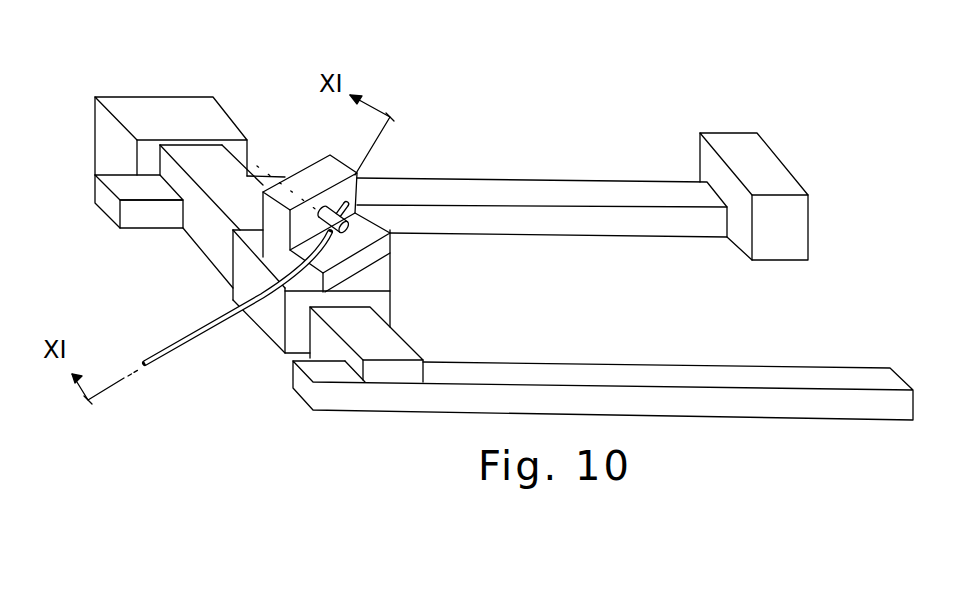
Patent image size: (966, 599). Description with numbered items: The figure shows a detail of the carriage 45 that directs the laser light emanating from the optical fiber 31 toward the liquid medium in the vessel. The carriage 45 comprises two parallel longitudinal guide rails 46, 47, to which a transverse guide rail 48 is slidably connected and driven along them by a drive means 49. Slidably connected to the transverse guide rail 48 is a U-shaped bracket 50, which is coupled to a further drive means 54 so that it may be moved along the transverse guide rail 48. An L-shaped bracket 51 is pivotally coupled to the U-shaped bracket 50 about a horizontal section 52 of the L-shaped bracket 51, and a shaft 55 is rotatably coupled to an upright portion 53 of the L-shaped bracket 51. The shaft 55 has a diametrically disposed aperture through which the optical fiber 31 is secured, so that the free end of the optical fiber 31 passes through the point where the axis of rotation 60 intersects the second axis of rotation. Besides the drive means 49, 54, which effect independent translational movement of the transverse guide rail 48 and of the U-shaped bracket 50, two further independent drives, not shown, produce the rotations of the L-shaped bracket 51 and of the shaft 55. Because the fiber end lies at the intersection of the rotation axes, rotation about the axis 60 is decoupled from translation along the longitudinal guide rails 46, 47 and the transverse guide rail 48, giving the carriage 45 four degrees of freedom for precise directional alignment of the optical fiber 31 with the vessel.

The optical fiber 31 is at (147, 368).
The carriage 45 is at (866, 287).
The longitudinal guide rail 46 is at (547, 185).
The longitudinal guide rail 47 is at (578, 367).
The transverse guide rail 48 is at (390, 347).
The drive means 49 is at (720, 138).
The U-shaped bracket 50 is at (390, 279).
The L-shaped bracket 51 is at (311, 155).
The horizontal section 52 is at (328, 258).
The upright portion 53 is at (287, 226).
The drive means 54 is at (149, 103).
The shaft 55 is at (413, 232).
The axis of rotation 60 is at (253, 163).